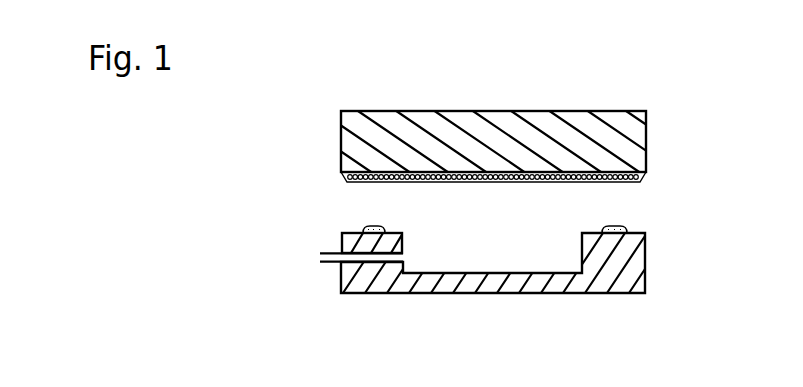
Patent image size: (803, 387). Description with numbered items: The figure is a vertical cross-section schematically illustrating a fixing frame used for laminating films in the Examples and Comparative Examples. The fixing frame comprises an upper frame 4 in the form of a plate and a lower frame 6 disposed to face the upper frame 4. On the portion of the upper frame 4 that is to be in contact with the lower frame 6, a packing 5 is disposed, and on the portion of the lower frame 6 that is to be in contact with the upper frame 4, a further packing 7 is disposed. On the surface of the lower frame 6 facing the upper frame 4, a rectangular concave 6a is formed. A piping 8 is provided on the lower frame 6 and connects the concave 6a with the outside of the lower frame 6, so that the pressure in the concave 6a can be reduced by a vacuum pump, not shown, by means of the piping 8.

The upper frame 4 is at (647, 123).
The packing 5 is at (642, 182).
The lower frame 6 is at (645, 278).
The concave 6a is at (523, 253).
The packing 7 is at (363, 227).
The piping 8 is at (320, 263).